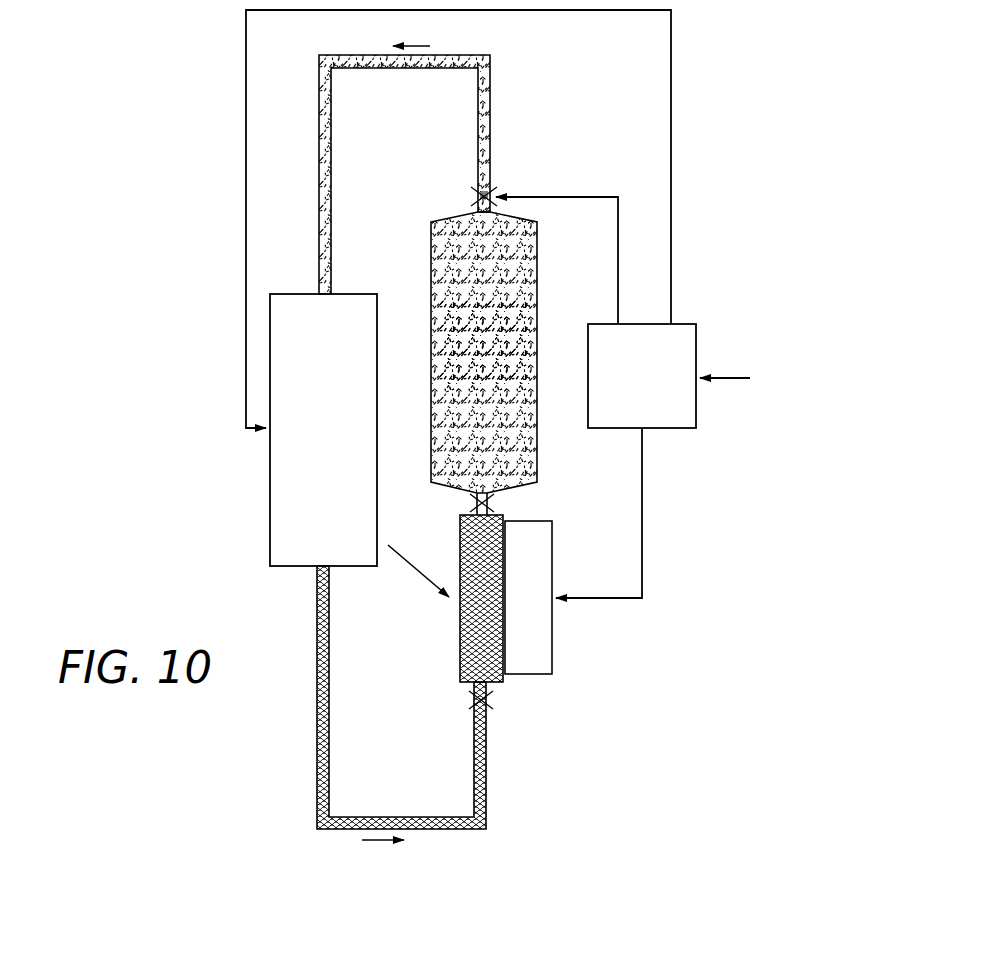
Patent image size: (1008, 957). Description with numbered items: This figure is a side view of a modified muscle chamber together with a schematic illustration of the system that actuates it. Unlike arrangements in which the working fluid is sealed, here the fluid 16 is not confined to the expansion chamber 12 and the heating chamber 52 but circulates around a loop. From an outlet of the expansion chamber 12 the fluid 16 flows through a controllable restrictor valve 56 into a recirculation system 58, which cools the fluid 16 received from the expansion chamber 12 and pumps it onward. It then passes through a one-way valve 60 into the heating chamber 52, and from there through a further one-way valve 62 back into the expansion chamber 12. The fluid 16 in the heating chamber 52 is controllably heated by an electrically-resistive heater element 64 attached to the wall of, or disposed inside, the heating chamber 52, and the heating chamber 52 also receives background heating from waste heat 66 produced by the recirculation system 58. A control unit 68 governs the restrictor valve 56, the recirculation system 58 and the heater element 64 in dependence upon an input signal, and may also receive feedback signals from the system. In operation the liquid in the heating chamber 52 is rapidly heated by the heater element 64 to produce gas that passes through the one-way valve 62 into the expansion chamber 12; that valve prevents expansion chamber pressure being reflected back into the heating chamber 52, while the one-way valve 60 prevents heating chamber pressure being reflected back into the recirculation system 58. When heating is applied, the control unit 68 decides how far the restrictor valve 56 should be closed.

The expansion chamber 12 is at (428, 278).
The fluid 16 is at (517, 361).
The heating chamber 52 is at (458, 635).
The controllable restrictor valve 56 is at (471, 193).
The recirculation system 58 is at (270, 518).
The one-way valve 60 is at (466, 707).
The further one-way valve 62 is at (466, 503).
The electrically-resistive heater element 64 is at (535, 652).
The waste heat 66 is at (416, 580).
The control unit 68 is at (678, 434).